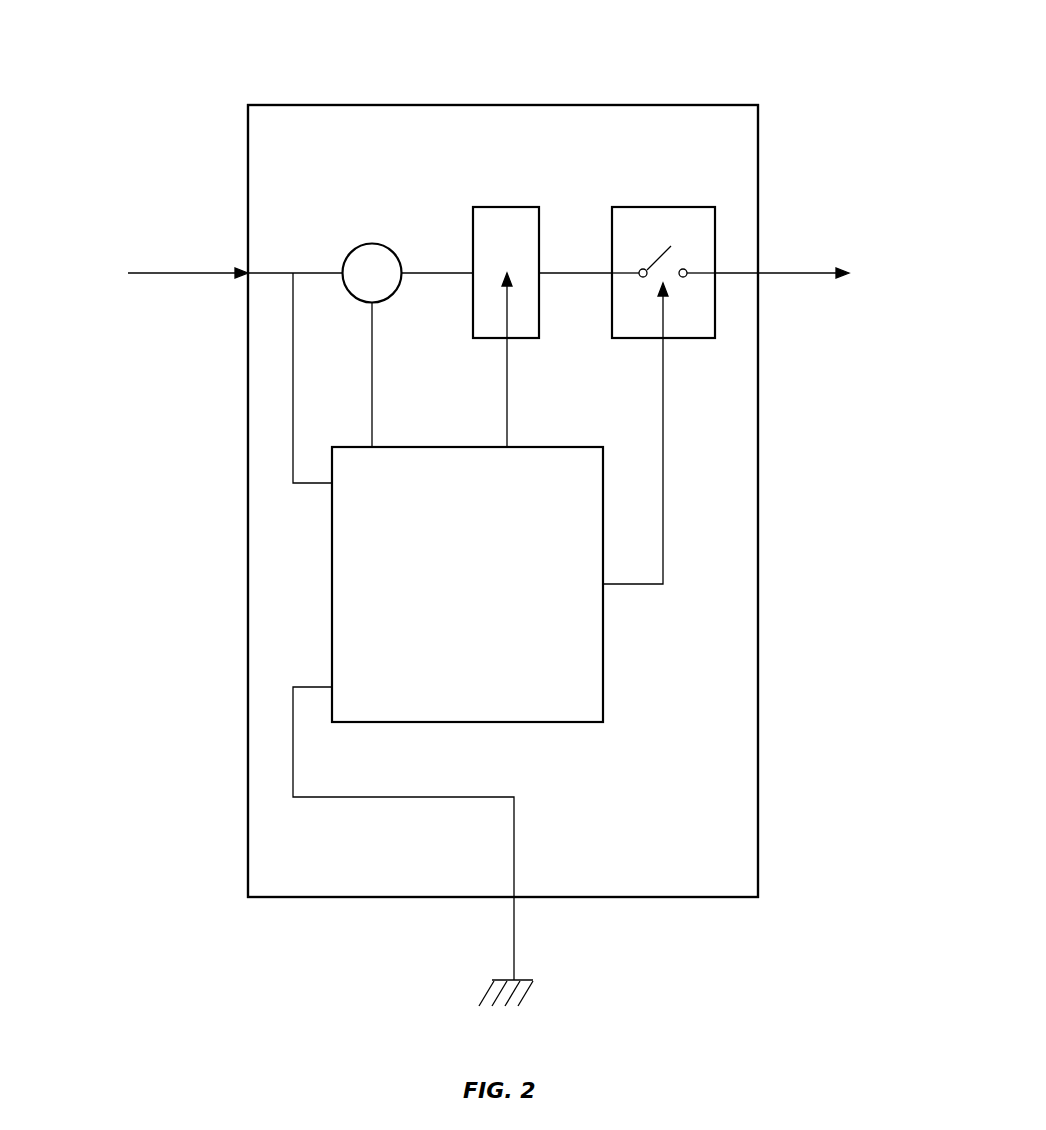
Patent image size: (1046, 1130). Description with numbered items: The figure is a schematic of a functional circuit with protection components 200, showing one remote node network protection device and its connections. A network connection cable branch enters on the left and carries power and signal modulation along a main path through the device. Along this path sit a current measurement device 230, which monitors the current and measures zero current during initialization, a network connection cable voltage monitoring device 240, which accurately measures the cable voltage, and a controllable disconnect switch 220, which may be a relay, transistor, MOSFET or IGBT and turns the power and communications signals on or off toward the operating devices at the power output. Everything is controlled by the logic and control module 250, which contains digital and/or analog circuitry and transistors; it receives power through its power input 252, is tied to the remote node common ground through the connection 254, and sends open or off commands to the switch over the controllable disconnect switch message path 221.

The functional circuit with protection components 200 is at (252, 28).
The current measurement device 230 is at (372, 243).
The network connection cable voltage monitoring device 240 is at (505, 207).
The controllable disconnect switch 220 is at (663, 207).
The controllable disconnect switch message path 221 is at (663, 410).
The logic and control module 250 is at (603, 660).
The power input for logic and control module 252 is at (311, 487).
The connection of logic and control circuitry module to common ground 254 is at (320, 801).